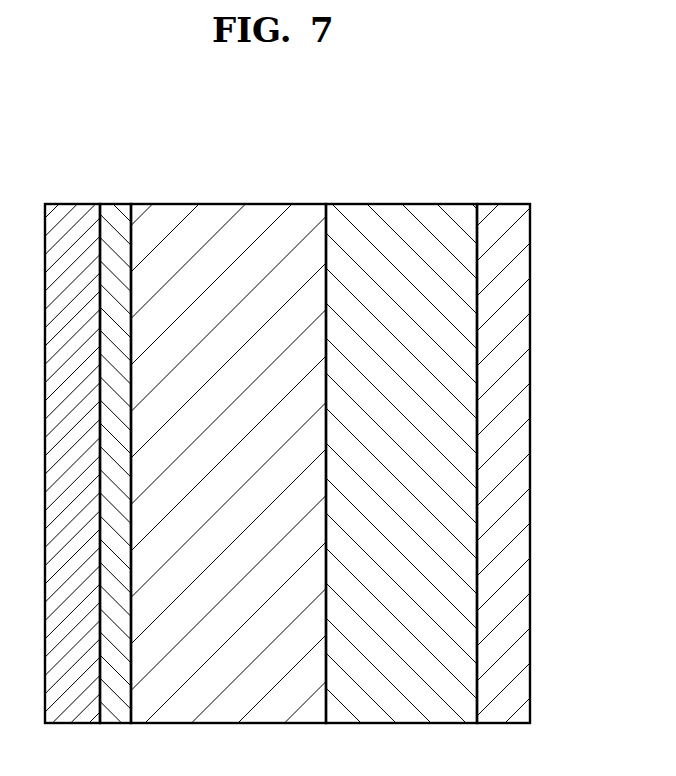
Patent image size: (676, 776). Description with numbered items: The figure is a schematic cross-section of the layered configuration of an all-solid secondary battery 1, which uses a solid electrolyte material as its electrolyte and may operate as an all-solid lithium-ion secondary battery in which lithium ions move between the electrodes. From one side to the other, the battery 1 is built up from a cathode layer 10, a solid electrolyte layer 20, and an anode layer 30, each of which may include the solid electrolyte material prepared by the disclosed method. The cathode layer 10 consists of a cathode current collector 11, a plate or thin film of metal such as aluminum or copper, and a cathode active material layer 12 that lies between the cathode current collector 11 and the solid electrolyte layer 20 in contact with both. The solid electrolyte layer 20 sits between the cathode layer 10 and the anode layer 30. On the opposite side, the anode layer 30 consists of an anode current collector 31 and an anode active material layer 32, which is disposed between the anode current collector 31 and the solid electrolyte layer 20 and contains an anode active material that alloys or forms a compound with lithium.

The all-solid secondary battery 1 is at (570, 128).
The cathode layer 10 is at (510, 140).
The cathode current collector 11 is at (506, 212).
The cathode active material layer 12 is at (399, 212).
The solid electrolyte layer 20 is at (227, 216).
The anode layer 30 is at (67, 140).
The anode current collector 31 is at (73, 212).
The anode active material layer 32 is at (116, 212).